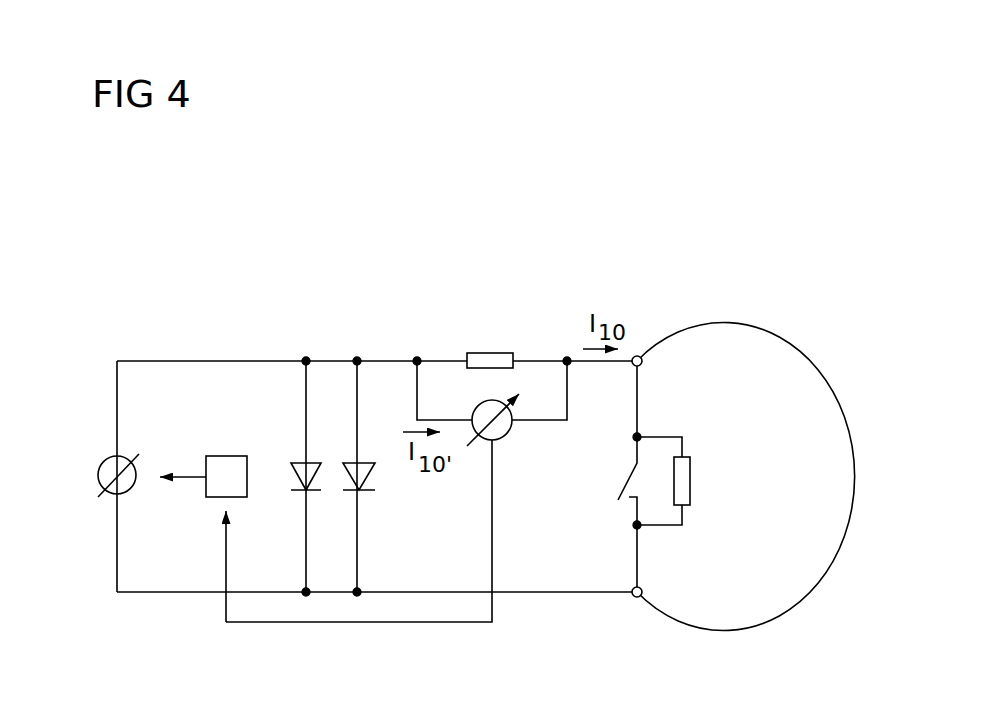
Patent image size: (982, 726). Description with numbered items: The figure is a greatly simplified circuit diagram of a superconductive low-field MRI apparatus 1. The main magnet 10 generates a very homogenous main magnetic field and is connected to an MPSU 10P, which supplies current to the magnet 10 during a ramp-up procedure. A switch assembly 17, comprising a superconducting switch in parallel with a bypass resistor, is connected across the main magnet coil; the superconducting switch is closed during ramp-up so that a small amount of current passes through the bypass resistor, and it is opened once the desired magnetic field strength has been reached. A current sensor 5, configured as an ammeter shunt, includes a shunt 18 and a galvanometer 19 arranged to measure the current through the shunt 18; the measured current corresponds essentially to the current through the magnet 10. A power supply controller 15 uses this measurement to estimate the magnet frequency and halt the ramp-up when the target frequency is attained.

The superconductive low-field MRI apparatus 1 is at (644, 254).
The measuring circuit 5 is at (442, 338).
The main magnet 10 is at (724, 324).
The MPSU 10P is at (86, 424).
The power supply controller 15 is at (226, 456).
The switch assembly 17 is at (670, 548).
The shunt 18 is at (491, 353).
The galvanometer 19 is at (512, 440).